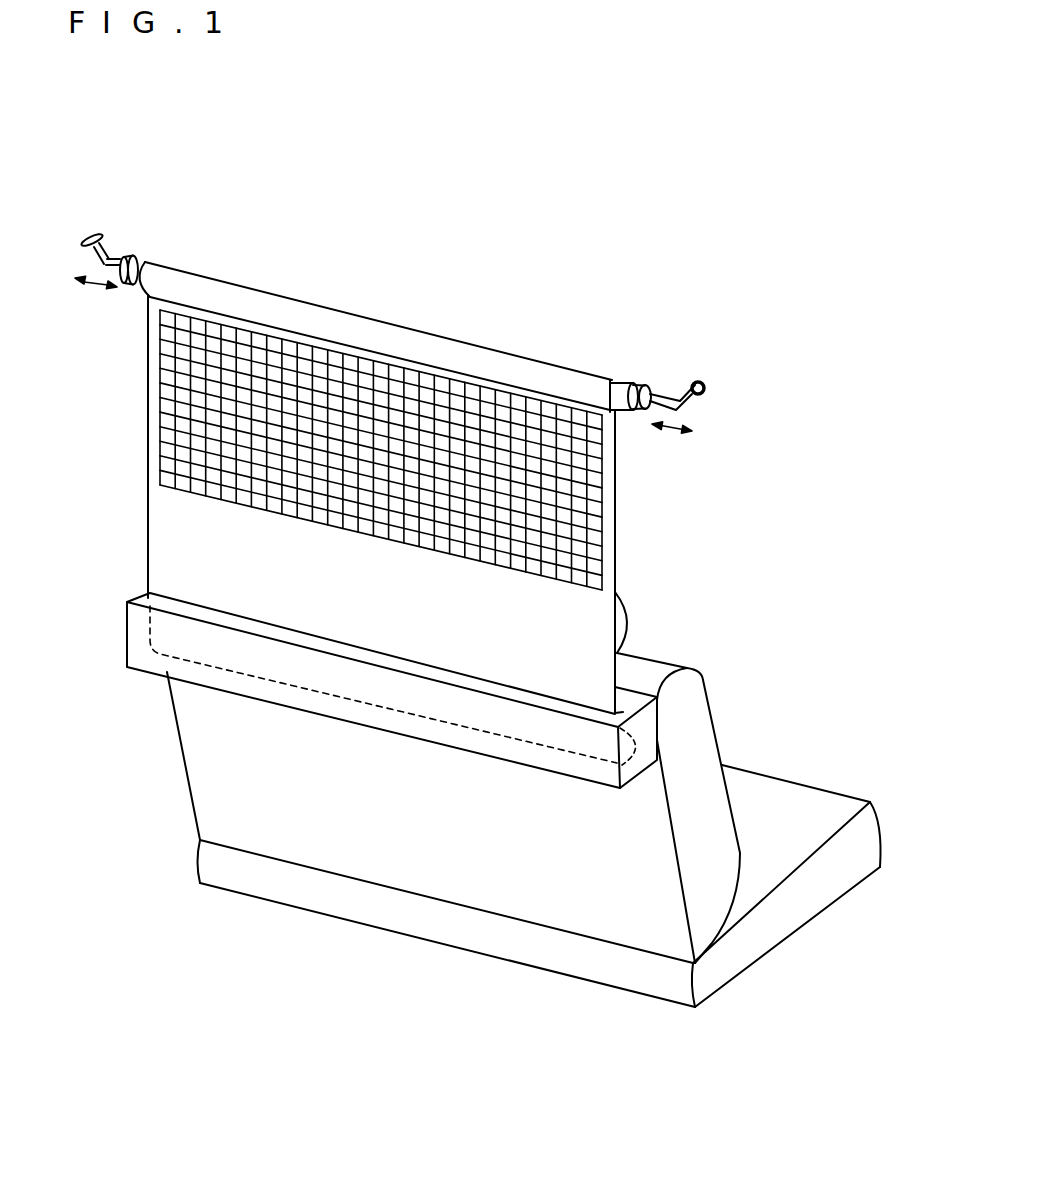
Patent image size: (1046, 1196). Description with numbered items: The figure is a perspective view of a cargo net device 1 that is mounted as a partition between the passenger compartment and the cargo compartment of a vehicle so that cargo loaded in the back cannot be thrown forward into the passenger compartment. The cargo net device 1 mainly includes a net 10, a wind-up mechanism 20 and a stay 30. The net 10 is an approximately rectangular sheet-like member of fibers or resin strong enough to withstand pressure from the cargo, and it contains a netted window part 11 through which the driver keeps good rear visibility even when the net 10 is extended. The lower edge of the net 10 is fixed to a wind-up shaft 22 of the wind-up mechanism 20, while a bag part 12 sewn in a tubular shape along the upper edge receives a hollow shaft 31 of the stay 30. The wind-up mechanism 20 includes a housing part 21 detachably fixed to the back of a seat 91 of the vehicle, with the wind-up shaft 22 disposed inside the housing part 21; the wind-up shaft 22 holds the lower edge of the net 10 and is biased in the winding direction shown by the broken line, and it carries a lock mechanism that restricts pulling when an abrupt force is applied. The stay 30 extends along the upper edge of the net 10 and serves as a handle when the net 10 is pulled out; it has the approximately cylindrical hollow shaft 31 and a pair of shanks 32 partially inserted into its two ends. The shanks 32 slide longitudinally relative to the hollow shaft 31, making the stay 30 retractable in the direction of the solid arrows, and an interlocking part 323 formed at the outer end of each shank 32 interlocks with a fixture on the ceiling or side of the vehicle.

The cargo net device 1 is at (184, 202).
The net 10 is at (135, 401).
The window part 11 is at (600, 527).
The bag part 12 is at (270, 302).
The wind-up mechanism 20 is at (116, 603).
The housing part 21 is at (432, 737).
The wind-up shaft 22 is at (627, 790).
The stay 30 is at (709, 411).
The hollow shaft 31 is at (625, 384).
The shank 32 is at (120, 258).
The interlocking part 323 is at (91, 236).
The seat 91 is at (652, 668).